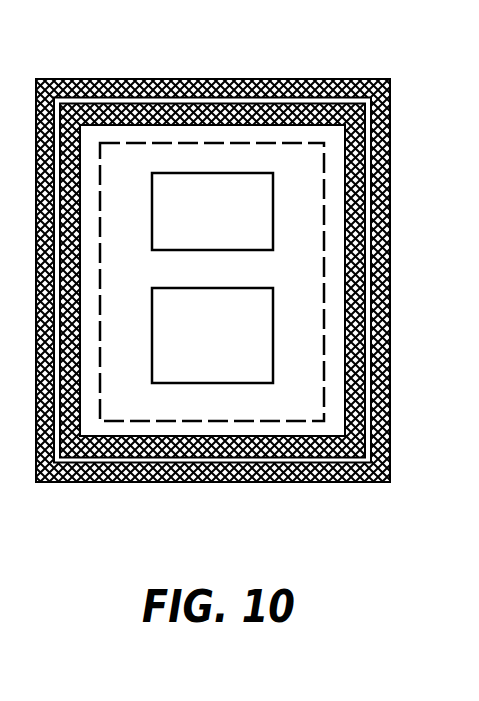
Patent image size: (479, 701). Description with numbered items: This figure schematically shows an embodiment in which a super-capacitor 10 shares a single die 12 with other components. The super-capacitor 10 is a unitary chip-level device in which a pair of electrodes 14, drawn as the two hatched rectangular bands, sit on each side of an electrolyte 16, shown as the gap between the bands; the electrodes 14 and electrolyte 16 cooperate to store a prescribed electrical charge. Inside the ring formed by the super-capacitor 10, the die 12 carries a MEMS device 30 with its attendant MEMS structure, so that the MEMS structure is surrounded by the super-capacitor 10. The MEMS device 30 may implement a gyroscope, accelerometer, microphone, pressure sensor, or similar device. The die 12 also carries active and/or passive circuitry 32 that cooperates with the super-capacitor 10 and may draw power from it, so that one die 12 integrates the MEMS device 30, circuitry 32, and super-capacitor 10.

The super-capacitor 10 is at (404, 211).
The die 12 is at (300, 397).
The electrodes 14 is at (172, 88).
The electrolyte 16 is at (247, 104).
The MEMS device 30 is at (198, 374).
The circuitry 32 is at (198, 236).